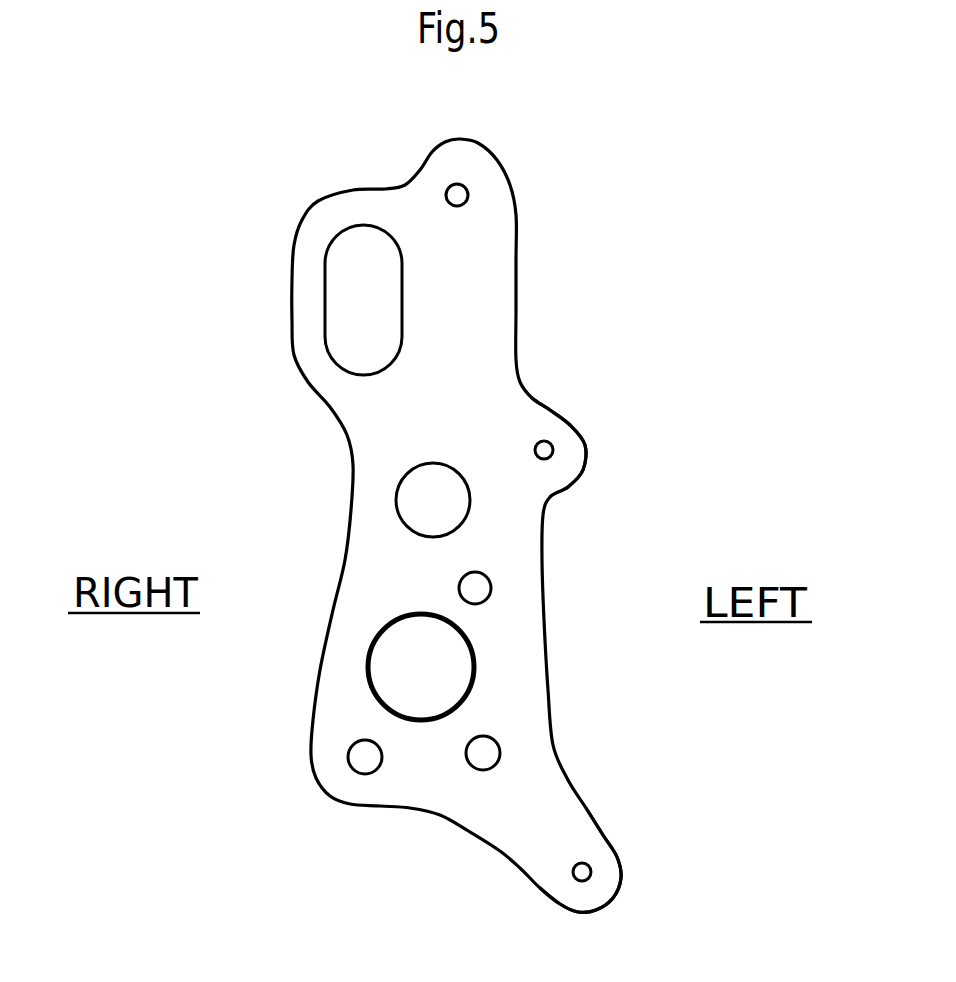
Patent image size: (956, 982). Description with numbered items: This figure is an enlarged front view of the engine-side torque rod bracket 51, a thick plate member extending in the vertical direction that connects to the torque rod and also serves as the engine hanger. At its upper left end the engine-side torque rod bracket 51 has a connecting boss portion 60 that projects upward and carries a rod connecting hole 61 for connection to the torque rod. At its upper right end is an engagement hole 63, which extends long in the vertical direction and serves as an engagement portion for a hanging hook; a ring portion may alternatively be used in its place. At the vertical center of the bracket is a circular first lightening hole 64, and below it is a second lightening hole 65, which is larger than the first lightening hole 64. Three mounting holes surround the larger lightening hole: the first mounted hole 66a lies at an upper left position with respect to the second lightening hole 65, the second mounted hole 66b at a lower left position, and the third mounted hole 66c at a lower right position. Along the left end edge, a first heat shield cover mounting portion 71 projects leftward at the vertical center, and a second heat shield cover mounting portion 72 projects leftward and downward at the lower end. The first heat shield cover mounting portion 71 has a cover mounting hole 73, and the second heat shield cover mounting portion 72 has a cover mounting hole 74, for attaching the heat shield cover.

The engine-side torque rod bracket 51 is at (484, 544).
The connecting boss portion 60 is at (487, 167).
The rod connecting hole 61 is at (470, 197).
The engagement hole 63 is at (327, 325).
The first lightening hole 64 is at (403, 517).
The second lightening hole 65 is at (378, 693).
The first mounted hole 66a is at (492, 590).
The second mounted hole 66b is at (485, 755).
The third mounted hole 66c is at (355, 763).
The first heat shield cover mounting portion 71 is at (555, 397).
The second heat shield cover mounting portion 72 is at (612, 862).
The cover mounting hole 73 is at (547, 455).
The cover mounting hole 74 is at (583, 872).